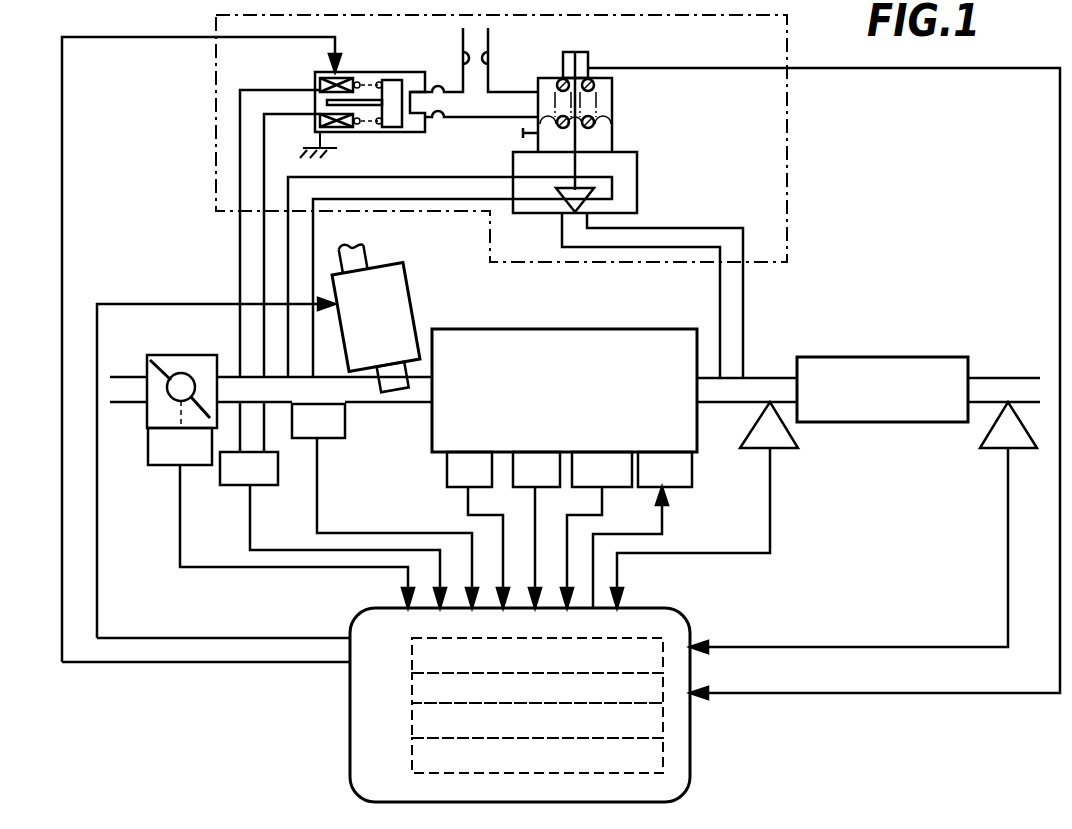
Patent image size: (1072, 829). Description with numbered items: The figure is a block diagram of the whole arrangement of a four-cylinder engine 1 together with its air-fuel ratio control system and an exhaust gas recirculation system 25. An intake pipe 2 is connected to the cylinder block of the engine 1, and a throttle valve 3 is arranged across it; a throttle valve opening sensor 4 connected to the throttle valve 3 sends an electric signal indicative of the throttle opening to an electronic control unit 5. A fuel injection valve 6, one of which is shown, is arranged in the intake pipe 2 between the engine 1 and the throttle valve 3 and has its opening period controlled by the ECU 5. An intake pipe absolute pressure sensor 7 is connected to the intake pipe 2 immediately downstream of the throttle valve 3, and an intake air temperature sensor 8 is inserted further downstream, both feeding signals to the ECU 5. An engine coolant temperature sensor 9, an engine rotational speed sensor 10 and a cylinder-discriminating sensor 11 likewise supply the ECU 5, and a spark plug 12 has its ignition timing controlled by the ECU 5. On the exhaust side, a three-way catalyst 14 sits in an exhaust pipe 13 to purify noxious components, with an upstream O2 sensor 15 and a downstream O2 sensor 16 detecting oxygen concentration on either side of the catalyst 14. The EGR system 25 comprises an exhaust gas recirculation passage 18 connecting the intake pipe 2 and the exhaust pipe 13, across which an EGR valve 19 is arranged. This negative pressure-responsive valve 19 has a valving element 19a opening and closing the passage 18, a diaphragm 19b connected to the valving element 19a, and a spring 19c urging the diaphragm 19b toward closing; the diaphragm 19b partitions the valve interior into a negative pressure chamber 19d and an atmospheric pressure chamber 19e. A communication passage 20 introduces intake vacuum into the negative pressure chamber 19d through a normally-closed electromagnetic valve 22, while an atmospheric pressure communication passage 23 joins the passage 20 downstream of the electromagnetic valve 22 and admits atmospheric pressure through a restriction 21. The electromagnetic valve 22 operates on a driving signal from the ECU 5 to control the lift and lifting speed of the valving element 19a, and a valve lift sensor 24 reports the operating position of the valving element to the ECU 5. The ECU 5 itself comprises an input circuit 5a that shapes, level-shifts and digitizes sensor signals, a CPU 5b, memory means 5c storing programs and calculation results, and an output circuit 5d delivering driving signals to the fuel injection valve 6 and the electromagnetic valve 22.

The engine 1 is at (665, 329).
The intake pipe 2 is at (392, 404).
The throttle valve 3 is at (165, 362).
The throttle valve opening sensor 4 is at (203, 470).
The electronic control unit 5 is at (516, 695).
The input circuit 5a is at (630, 638).
The central processing unit 5b is at (668, 679).
The memory means 5c is at (668, 723).
The output circuit 5d is at (668, 763).
The fuel injection valve 6 is at (410, 320).
The intake pipe absolute pressure sensor 7 is at (270, 486).
The intake air temperature sensor 8 is at (332, 442).
The engine coolant temperature sensor 9 is at (478, 489).
The engine rotational speed sensor 10 is at (544, 489).
The cylinder-discriminating sensor 11 is at (606, 489).
The spark plug 12 is at (670, 489).
The exhaust pipe 13 is at (762, 377).
The three-way catalyst 14 is at (875, 356).
The upstream O2 sensor 15 is at (797, 441).
The downstream O2 sensor 16 is at (1003, 447).
The exhaust gas recirculation passage 18 is at (313, 176).
The exhaust gas recirculation control valve 19 is at (589, 132).
The valving element 19a is at (613, 193).
The diaphragm 19b is at (607, 119).
The spring 19c is at (598, 86).
The negative pressure chamber 19d is at (603, 99).
The atmospheric pressure chamber 19e is at (547, 137).
The communication passage 20 is at (278, 89).
The restriction 21 is at (466, 56).
The electromagnetic valve 22 is at (416, 72).
The atmospheric pressure communication passage 23 is at (500, 52).
The valve lift sensor 24 is at (590, 53).
The exhaust gas recirculation system 25 is at (787, 147).